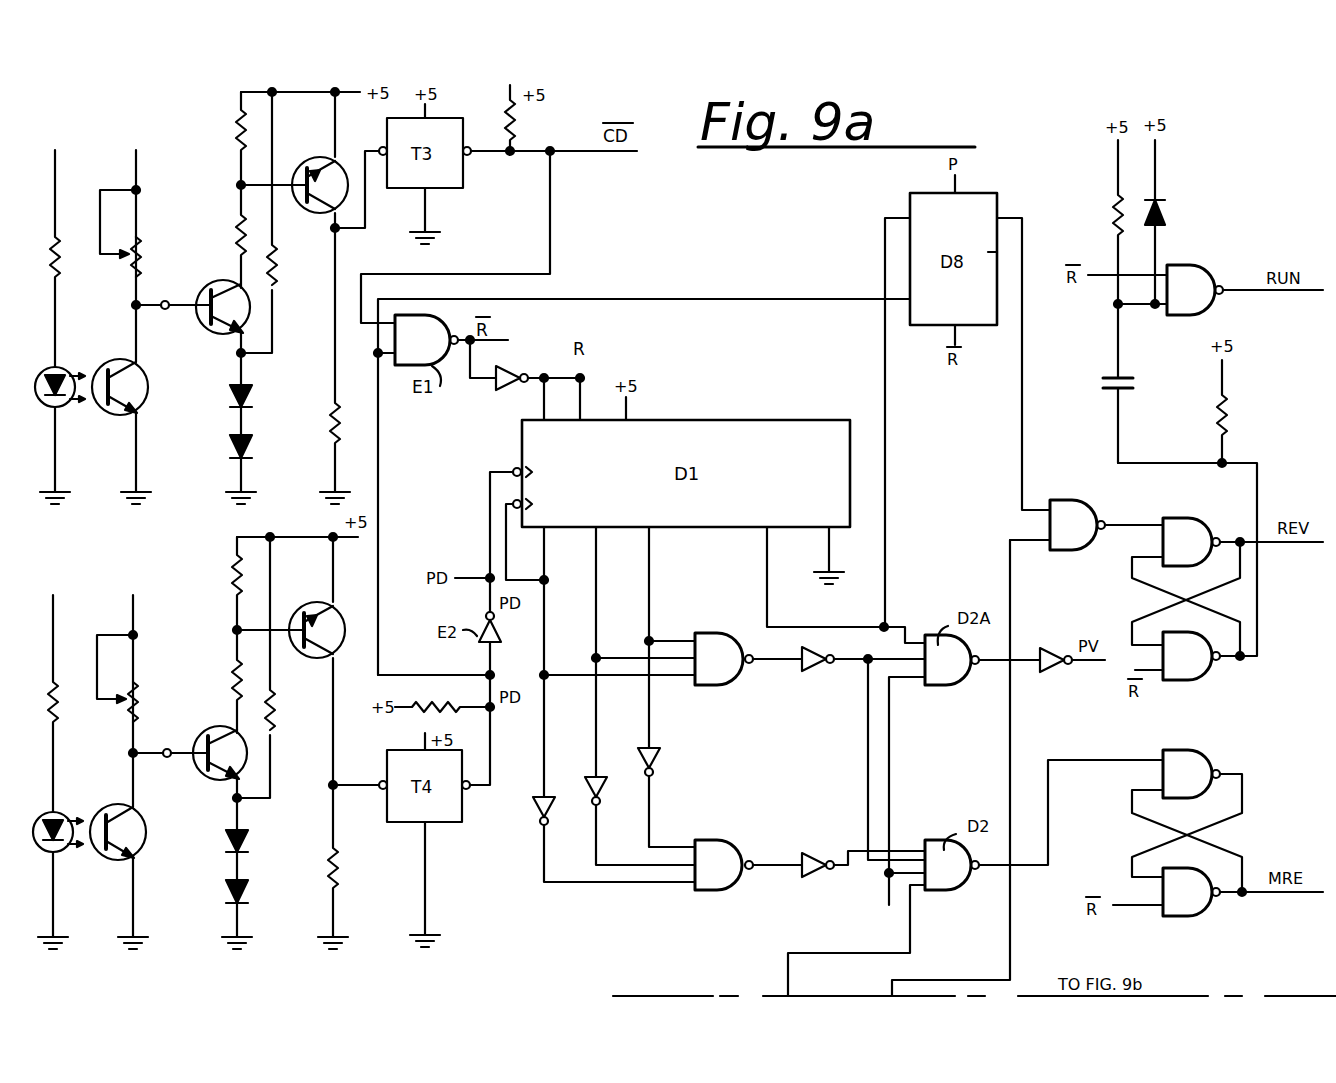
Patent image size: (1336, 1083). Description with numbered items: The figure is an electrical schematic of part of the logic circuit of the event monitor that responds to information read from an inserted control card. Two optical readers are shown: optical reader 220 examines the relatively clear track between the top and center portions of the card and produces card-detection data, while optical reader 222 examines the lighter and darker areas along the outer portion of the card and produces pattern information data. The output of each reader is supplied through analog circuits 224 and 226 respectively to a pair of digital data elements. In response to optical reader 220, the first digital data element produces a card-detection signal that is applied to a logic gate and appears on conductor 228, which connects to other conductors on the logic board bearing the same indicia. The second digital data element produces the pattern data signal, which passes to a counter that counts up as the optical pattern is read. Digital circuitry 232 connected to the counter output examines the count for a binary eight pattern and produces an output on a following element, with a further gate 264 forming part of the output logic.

The optical reader 220 is at (148, 385).
The optical reader 222 is at (146, 830).
The analog circuit 224 is at (288, 265).
The analog circuit 226 is at (331, 782).
The conductor 228 is at (588, 153).
The digital circuitry 232 is at (766, 890).
The flip-flop NAND gate 264 is at (1180, 524).